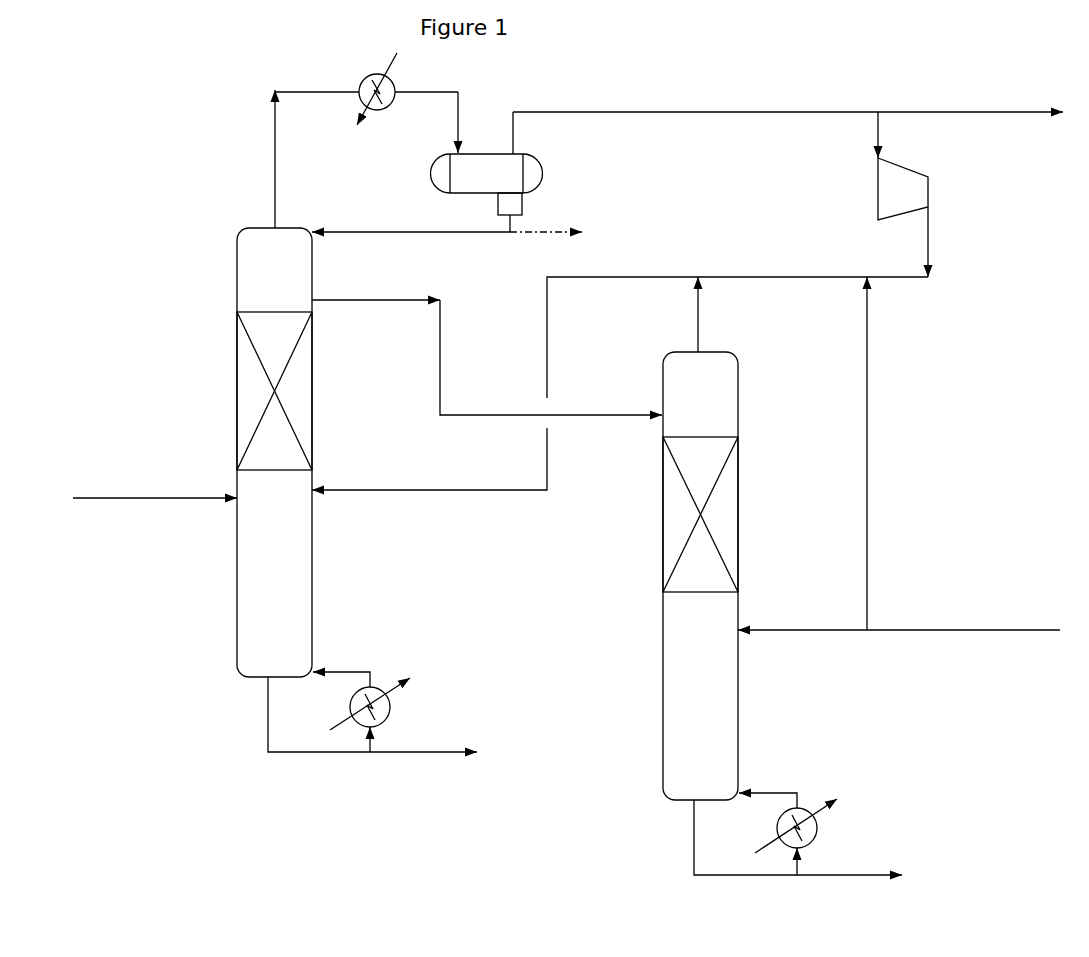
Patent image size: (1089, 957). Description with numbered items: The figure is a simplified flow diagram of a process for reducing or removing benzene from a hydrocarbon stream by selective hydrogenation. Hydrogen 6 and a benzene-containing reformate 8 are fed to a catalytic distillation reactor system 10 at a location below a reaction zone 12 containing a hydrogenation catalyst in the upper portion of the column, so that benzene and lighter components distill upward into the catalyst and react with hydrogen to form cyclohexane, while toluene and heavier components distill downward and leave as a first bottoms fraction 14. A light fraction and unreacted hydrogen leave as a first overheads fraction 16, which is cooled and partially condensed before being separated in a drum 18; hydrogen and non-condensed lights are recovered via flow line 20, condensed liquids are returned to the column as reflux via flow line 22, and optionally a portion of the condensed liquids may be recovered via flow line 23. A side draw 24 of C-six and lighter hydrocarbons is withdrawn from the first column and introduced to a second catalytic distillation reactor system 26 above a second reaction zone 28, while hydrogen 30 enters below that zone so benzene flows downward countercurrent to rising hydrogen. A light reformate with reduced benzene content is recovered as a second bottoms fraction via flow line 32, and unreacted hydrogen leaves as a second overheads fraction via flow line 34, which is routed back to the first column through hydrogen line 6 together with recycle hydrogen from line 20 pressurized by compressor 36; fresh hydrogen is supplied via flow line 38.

The hydrogen 6 is at (584, 276).
The benzene-containing reformate 8 is at (96, 498).
The catalytic distillation reactor system 10 is at (241, 232).
The reaction zone 12 is at (252, 387).
The first bottoms fraction 14 is at (432, 754).
The first overheads fraction 16 is at (275, 178).
The drum 18 is at (432, 170).
The flow line 20 is at (513, 112).
The flow line 22 is at (395, 231).
The flow line 23 is at (534, 239).
The side draw 24 is at (444, 332).
The second catalytic distillation reactor system 26 is at (664, 359).
The reaction zone 28 is at (677, 510).
The hydrogen 30 is at (828, 630).
The flow line 32 is at (858, 876).
The flow line 34 is at (696, 328).
The compressor 36 is at (903, 166).
The flow line 38 is at (867, 447).